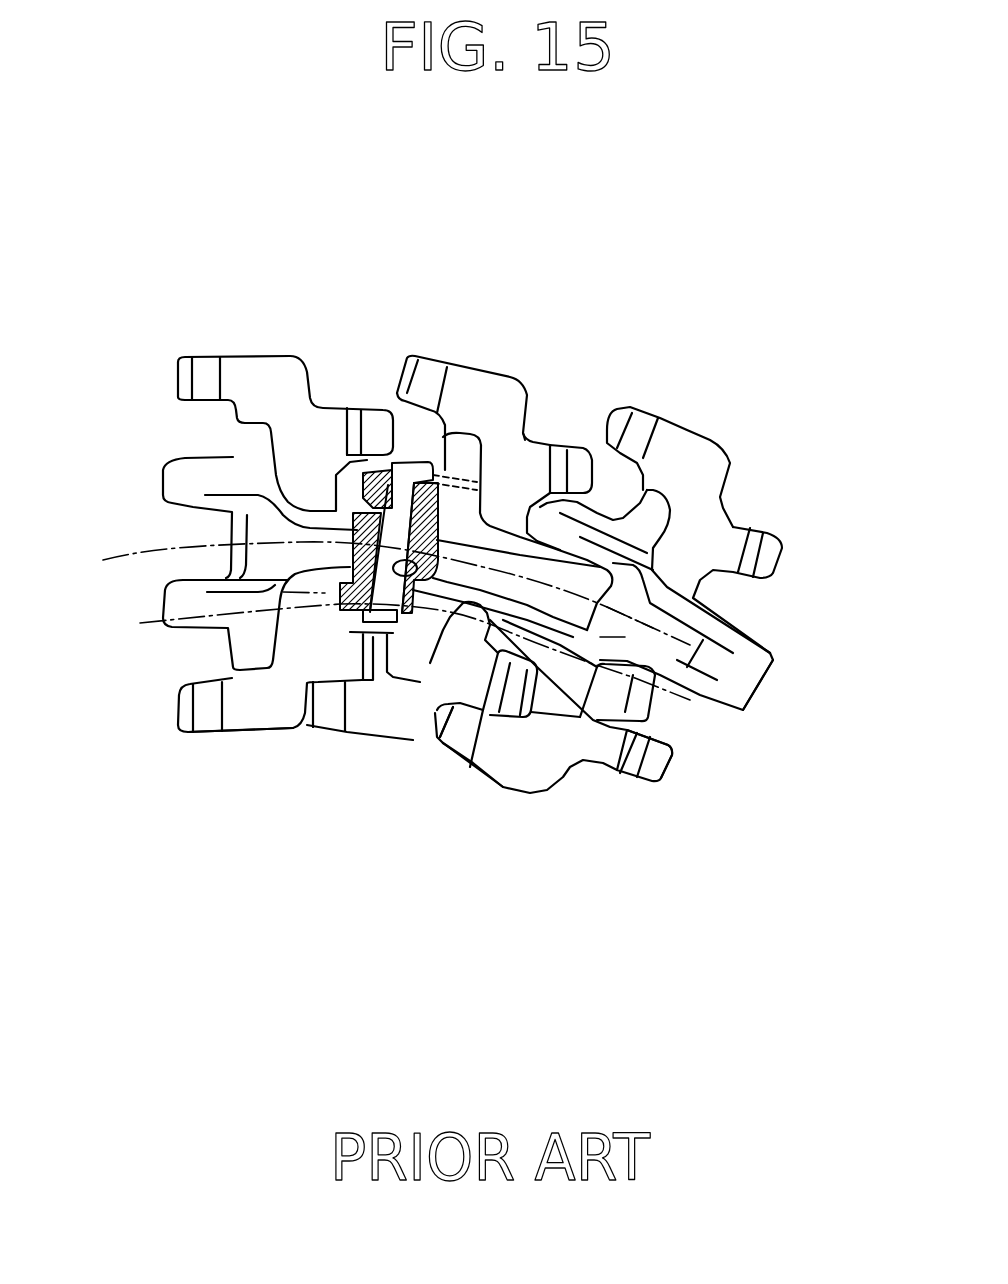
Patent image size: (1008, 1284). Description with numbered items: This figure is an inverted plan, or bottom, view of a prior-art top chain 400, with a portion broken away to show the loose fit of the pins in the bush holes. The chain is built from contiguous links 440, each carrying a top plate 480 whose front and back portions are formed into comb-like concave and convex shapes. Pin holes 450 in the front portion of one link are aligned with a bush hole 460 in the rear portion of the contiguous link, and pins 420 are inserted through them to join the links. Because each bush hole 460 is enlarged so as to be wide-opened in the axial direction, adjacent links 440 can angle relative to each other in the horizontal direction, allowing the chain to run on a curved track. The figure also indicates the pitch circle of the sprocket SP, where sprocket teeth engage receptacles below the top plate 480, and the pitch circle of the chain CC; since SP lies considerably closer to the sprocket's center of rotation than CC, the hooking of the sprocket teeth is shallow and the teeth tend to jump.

The top chain 400 is at (423, 850).
The pin 420 is at (430, 503).
The link 440 is at (233, 735).
The pin hole 450 is at (410, 467).
The bush hole 460 is at (667, 757).
The top plate 480 is at (268, 718).
The pitch circle of the chain CC is at (757, 687).
The pitch circle of the sprocket SP is at (643, 693).